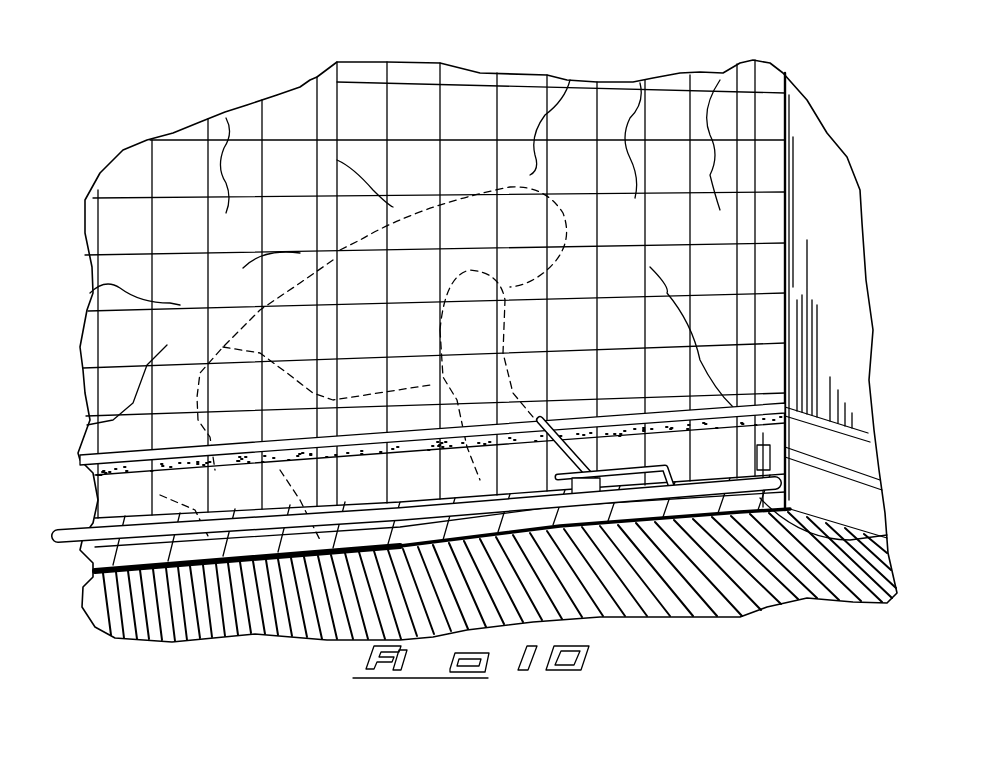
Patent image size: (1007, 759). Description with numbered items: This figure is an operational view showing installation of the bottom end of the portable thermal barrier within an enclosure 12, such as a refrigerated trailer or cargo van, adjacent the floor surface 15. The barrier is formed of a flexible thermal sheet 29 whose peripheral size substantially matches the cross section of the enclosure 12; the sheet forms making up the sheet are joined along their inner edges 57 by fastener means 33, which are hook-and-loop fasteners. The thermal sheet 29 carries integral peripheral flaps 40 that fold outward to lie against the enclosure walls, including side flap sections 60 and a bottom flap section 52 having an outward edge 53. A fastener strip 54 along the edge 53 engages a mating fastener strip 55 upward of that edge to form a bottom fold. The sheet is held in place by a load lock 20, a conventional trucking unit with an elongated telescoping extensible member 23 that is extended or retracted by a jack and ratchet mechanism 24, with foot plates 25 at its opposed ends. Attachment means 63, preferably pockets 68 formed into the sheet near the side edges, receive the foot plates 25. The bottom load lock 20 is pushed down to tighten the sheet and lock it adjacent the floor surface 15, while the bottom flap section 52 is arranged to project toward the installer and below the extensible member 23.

The enclosure 12 is at (857, 165).
The floor surface 15 is at (670, 583).
The load lock 20 is at (145, 512).
The extensible member 23 is at (712, 479).
The jack and ratchet mechanism 24 is at (600, 478).
The foot plates 25 is at (800, 490).
The thermal sheet 29 is at (305, 80).
The fastener means 33 is at (190, 432).
The peripheral flaps 40 is at (770, 184).
The bottom flap section 52 is at (790, 526).
The outward edge 53 is at (638, 523).
The fastener strip 54 is at (830, 535).
The mating fastener strip 55 is at (760, 410).
The inner edge 57 is at (333, 113).
The side flap sections 60 is at (778, 260).
The attachment means 63 is at (787, 446).
The pockets 68 is at (827, 440).